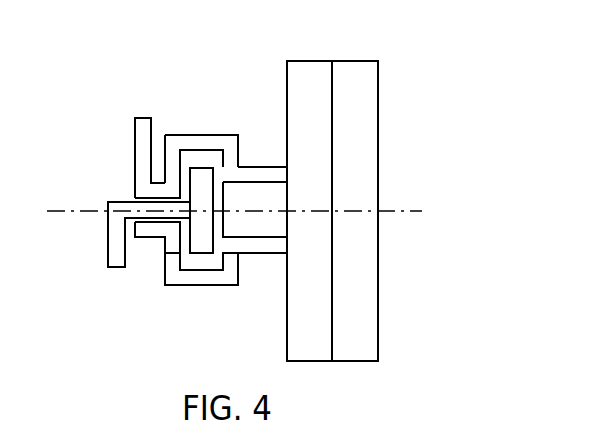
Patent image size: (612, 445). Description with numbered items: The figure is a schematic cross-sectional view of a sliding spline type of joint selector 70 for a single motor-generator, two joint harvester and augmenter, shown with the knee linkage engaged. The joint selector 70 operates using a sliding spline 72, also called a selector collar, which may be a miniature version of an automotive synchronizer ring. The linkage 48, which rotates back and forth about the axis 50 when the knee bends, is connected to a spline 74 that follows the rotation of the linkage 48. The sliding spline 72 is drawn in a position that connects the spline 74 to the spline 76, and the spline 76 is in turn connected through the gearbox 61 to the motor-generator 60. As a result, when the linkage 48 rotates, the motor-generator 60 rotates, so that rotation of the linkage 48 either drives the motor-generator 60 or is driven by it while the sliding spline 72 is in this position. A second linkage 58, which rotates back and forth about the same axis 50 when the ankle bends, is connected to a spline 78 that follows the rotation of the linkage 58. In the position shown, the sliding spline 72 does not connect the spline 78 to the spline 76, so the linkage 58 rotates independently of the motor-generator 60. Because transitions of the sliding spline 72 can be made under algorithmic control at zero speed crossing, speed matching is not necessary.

The linkage 48 is at (135, 143).
The axis 50 is at (395, 211).
The linkage 58 is at (108, 255).
The motor-generator 60 is at (378, 128).
The gearbox 61 is at (310, 60).
The joint selector 70 is at (267, 77).
The sliding spline 72 is at (217, 135).
The spline 74 is at (165, 168).
The spline 76 is at (255, 167).
The spline 78 is at (200, 253).